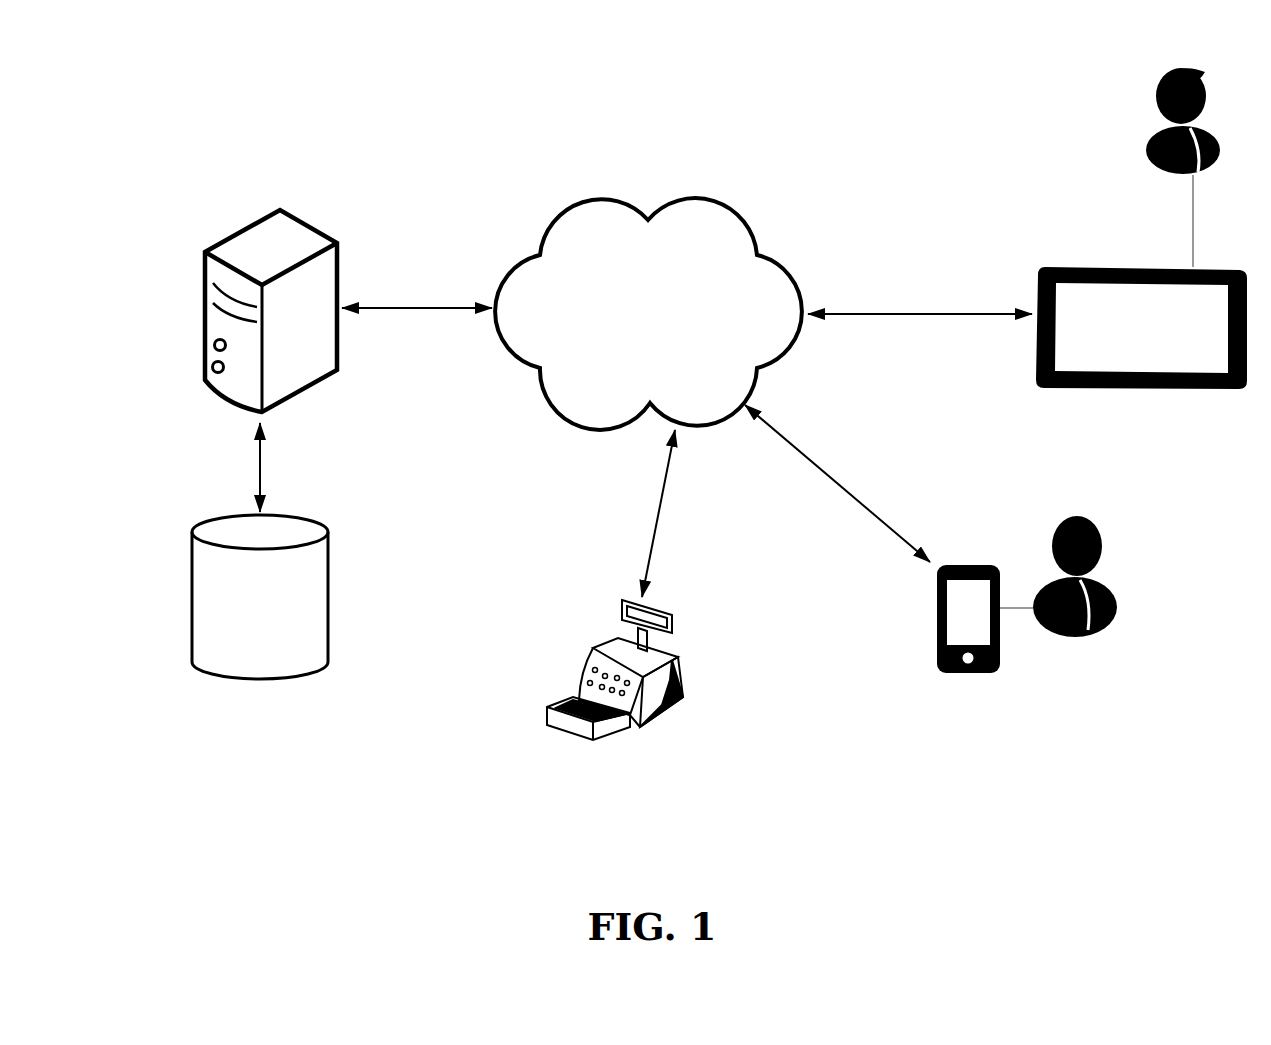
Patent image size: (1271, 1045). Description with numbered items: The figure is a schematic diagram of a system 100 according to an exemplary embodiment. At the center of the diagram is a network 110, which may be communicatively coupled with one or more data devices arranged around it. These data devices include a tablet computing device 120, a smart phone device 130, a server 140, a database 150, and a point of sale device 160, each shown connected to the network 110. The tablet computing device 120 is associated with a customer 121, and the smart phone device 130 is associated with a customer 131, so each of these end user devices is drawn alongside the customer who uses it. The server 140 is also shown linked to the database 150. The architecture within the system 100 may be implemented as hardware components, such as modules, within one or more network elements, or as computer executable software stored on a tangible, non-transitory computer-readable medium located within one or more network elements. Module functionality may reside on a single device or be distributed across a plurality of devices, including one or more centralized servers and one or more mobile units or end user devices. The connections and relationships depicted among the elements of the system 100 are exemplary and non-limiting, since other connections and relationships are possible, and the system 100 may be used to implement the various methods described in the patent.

The system 100 is at (669, 68).
The network 110 is at (648, 314).
The tablet computing device 120 is at (1141, 346).
The customer 121 is at (1183, 148).
The smart phone device 130 is at (968, 641).
The customer 131 is at (1058, 595).
The server 140 is at (271, 296).
The database 150 is at (260, 618).
The point of sale device 160 is at (615, 688).